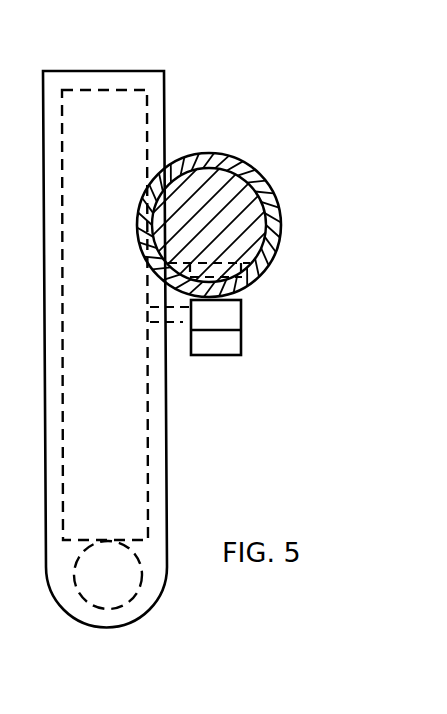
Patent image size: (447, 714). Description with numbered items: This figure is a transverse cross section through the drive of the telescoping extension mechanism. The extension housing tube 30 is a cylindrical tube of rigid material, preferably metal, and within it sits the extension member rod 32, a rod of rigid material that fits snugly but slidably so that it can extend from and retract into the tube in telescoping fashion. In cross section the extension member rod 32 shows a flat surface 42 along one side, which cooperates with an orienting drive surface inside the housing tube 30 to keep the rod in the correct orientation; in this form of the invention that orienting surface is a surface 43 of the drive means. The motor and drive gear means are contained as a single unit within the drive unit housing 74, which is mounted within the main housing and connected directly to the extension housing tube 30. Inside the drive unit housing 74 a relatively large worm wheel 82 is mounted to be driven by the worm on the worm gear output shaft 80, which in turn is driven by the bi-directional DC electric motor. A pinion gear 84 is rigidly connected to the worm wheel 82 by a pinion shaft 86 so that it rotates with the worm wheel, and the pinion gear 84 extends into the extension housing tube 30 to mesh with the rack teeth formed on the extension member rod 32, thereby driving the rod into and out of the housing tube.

The drive unit housing 74 is at (88, 69).
The orienting surface of the drive means 43 is at (167, 133).
The flat surface 42 is at (170, 205).
The extension member rod 32 is at (247, 222).
The extension housing tube 30 is at (280, 258).
The pinion gear 84 is at (233, 337).
The pinion shaft 86 is at (172, 318).
The worm wheel 82 is at (125, 476).
The worm gear output shaft 80 is at (125, 592).